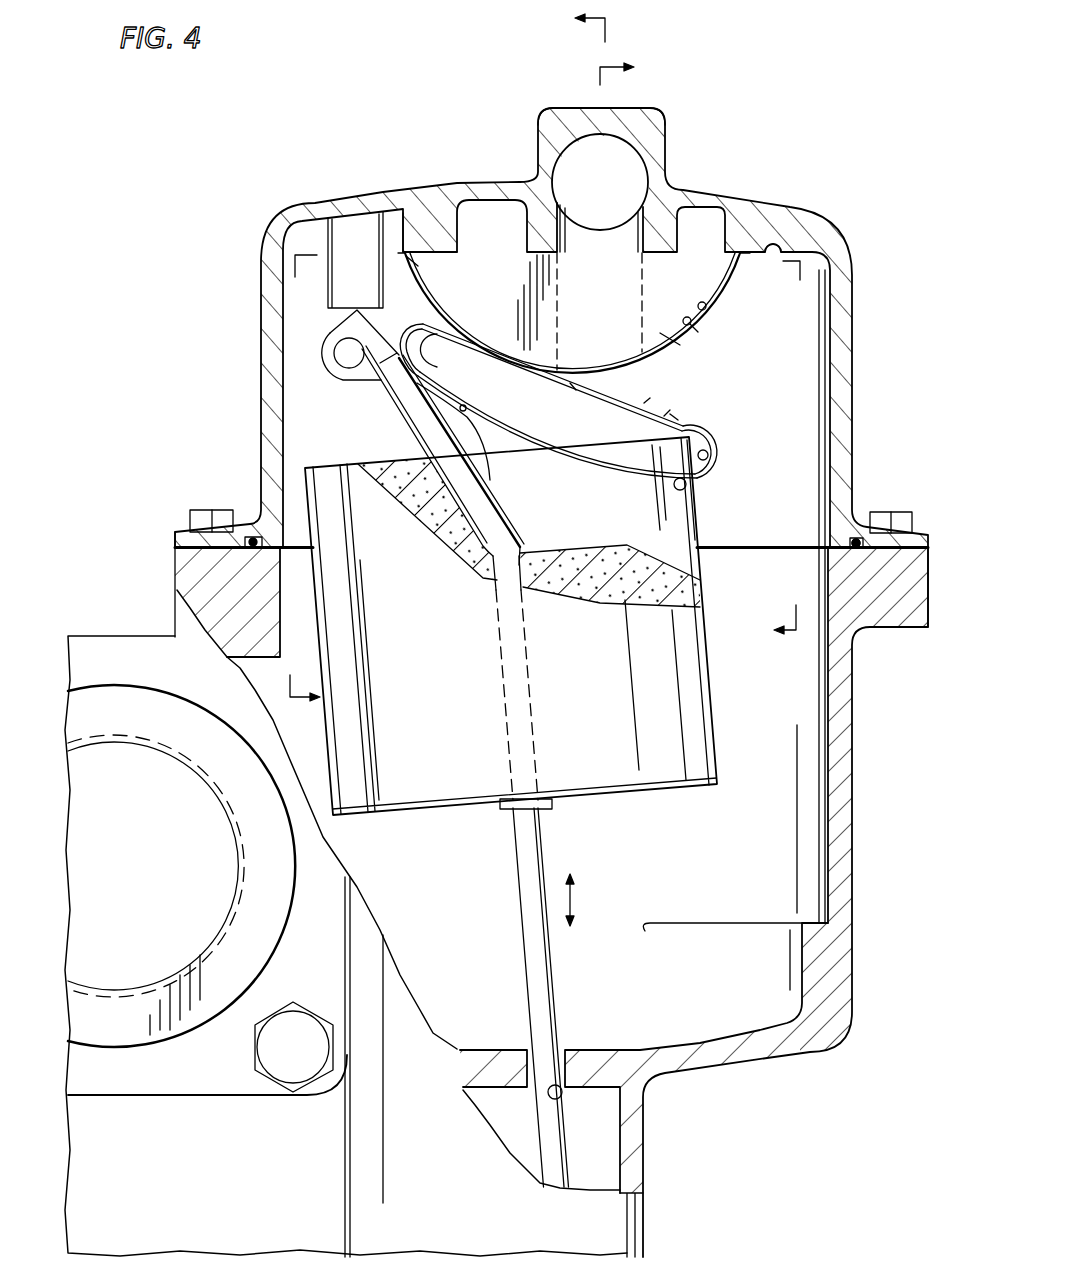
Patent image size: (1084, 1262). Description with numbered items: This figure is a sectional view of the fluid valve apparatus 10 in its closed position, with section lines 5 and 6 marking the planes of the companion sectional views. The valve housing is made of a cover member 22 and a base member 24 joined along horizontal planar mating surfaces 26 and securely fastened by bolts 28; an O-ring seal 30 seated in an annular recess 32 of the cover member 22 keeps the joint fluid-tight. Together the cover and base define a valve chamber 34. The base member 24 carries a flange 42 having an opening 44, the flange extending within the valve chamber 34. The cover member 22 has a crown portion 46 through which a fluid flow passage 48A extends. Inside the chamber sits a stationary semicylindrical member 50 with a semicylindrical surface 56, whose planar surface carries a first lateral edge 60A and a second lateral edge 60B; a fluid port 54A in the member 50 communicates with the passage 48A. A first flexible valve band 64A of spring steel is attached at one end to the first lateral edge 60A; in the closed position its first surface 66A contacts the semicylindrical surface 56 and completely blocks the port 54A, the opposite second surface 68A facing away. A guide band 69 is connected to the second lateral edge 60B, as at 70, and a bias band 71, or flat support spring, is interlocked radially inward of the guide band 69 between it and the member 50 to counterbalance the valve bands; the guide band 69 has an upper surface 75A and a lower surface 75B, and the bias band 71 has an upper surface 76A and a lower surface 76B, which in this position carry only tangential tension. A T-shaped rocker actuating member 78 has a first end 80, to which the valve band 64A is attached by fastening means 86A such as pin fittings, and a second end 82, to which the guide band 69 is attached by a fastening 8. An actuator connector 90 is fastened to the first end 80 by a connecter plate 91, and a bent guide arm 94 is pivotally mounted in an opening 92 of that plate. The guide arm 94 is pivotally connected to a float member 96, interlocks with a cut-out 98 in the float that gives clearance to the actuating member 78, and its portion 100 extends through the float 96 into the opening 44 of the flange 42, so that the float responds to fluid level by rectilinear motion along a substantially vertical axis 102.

The section line 5- 5 is at (467, 388).
The section line 6- 6 is at (683, 325).
The pin 8 is at (694, 490).
The fluid valve apparatus 10 is at (384, 76).
The cover member 22 is at (551, 310).
The base member 24 is at (714, 763).
The horizontal planar mating surfaces 26 is at (929, 540).
The bolts 28 is at (200, 510).
The O-ring seal 30 is at (857, 539).
The annular recess 32 is at (908, 520).
The valve chamber 34 is at (293, 572).
The flange 42 is at (482, 1060).
The opening 44 is at (561, 1098).
The crown portion 46 is at (653, 110).
The fluid flow passage 48A is at (636, 160).
The stationary semicylindrical member 50 is at (706, 290).
The fluid port 54A is at (642, 337).
The semicylindrical surface 56 is at (697, 328).
The first lateral edge 60A is at (700, 272).
The second lateral edge 60B is at (410, 252).
The first flexible valve band 64A is at (673, 340).
The first surface 66A is at (710, 312).
The second surface 68A is at (690, 338).
The guide band 69 is at (573, 384).
The connection of guide band 70 is at (425, 255).
The bias band 71 is at (612, 390).
The upper surface of guide band 75A is at (674, 413).
The lower surface of guide band 75B is at (557, 425).
The upper surface of bias band 76A is at (647, 401).
The lower surface of bias band 76B is at (667, 414).
The rocker actuating member 78 is at (592, 408).
The first end of actuating member 80 is at (418, 348).
The second end of actuating member 82 is at (713, 447).
The fastening means 86A is at (472, 442).
The actuator connector 90 is at (355, 312).
The connecter plate 91 is at (397, 350).
The opening 92 is at (334, 355).
The bent guide arm 94 is at (367, 430).
The float member 96 is at (538, 626).
The cut-out 98 is at (681, 522).
The rod 100 is at (548, 981).
The vertically directed axis 102 is at (574, 900).